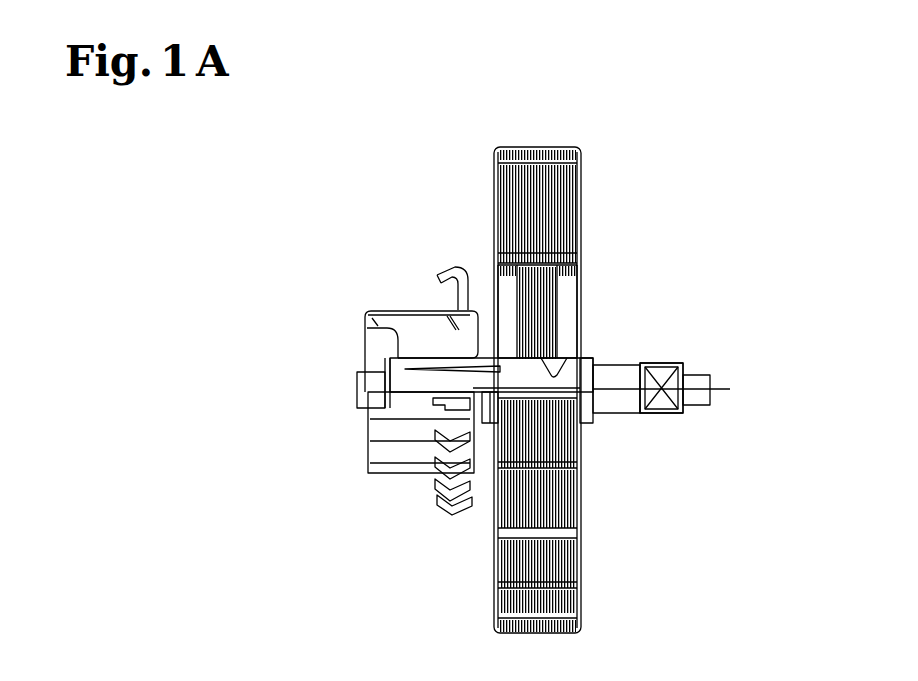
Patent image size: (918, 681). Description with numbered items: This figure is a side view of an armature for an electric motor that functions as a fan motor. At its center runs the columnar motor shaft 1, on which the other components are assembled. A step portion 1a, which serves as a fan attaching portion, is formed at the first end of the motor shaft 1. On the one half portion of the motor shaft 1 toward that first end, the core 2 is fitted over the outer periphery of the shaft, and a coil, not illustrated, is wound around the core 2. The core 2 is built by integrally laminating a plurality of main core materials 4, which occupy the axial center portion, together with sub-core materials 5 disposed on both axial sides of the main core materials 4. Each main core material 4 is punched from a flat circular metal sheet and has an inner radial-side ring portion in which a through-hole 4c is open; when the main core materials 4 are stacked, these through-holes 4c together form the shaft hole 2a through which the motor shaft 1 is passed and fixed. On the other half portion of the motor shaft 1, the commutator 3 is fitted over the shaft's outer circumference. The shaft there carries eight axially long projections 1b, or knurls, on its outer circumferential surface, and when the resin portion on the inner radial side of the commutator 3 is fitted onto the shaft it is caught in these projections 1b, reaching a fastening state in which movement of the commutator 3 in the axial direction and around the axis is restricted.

The motor shaft 1 is at (496, 332).
The step portion 1a is at (670, 365).
The projections 1b is at (427, 378).
The core 2 is at (613, 316).
The shaft hole 2a is at (664, 278).
The commutator 3 is at (409, 296).
The main core material 4 is at (531, 147).
The through-hole 4c is at (562, 362).
The sub-core material 5 is at (499, 138).